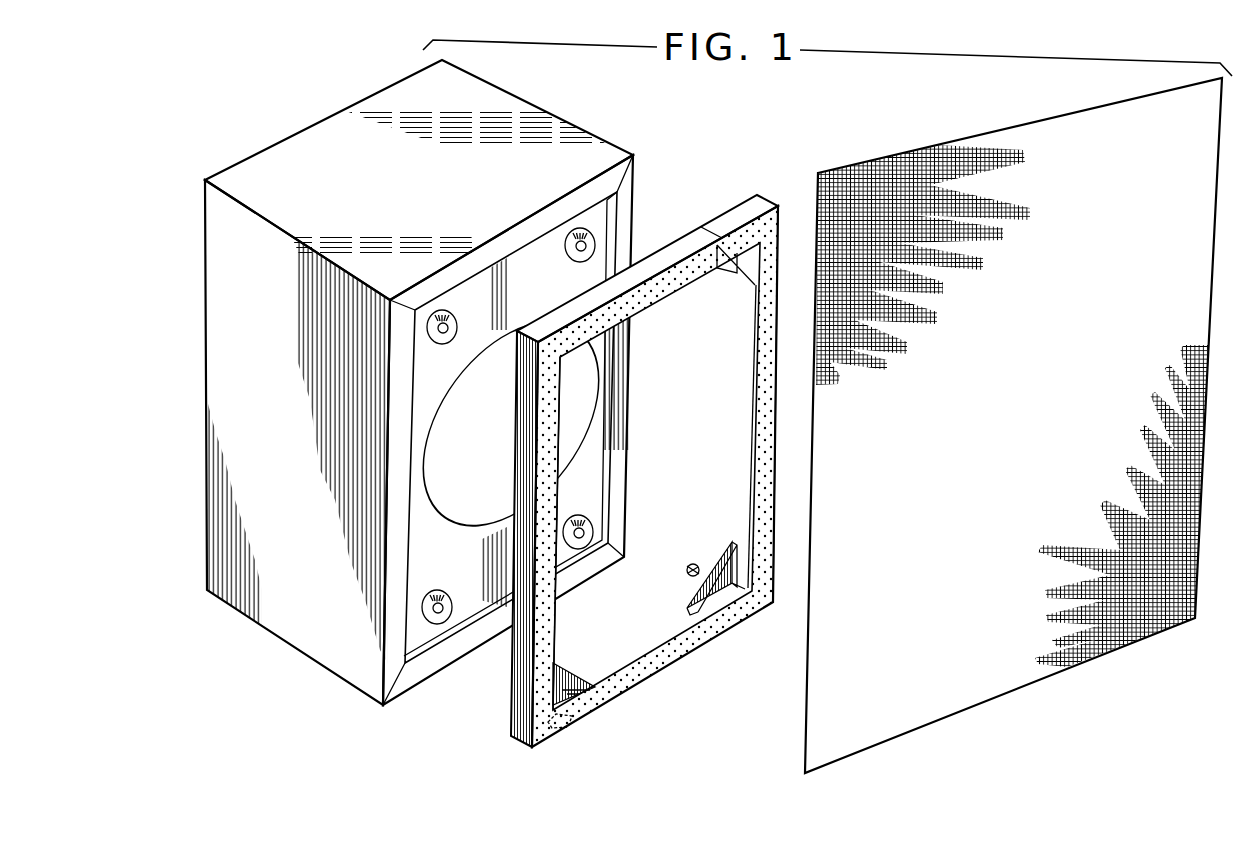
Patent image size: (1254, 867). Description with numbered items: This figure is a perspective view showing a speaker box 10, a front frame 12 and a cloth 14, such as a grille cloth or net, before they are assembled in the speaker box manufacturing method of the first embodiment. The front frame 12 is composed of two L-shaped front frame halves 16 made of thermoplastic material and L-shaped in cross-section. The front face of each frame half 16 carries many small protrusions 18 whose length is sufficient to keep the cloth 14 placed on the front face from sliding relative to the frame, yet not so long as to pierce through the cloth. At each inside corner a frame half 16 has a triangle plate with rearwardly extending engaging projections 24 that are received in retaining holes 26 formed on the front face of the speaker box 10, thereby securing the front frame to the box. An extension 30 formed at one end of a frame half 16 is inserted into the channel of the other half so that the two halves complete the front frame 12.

The speaker box 10 is at (592, 166).
The front frame 12 is at (665, 677).
The cloth 14 is at (977, 137).
The front frame half 16 is at (758, 399).
The small protrusions 18 is at (645, 309).
The engaging projections 24 is at (693, 562).
The retaining hole 26 is at (567, 258).
The extension 30 is at (578, 720).